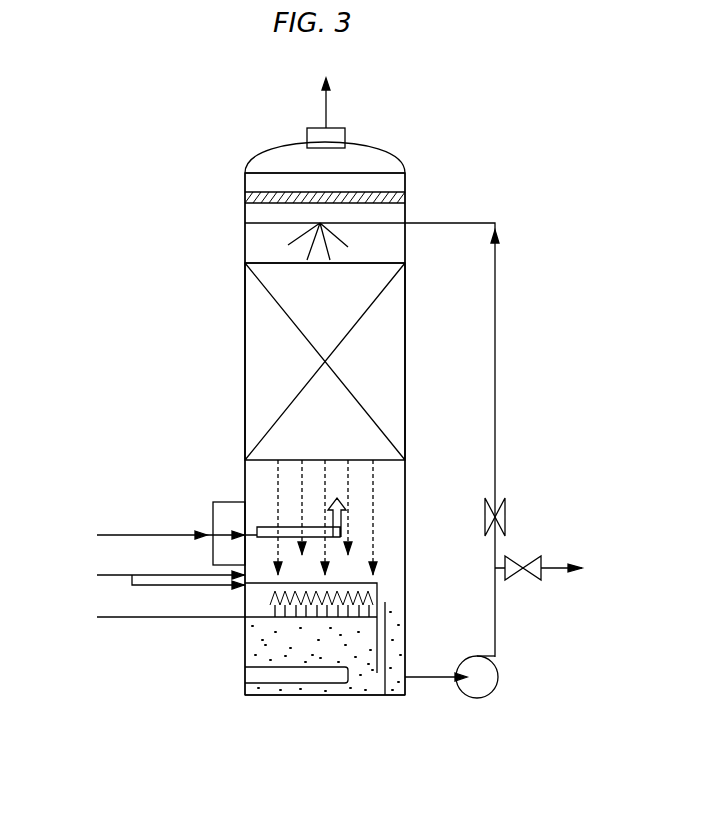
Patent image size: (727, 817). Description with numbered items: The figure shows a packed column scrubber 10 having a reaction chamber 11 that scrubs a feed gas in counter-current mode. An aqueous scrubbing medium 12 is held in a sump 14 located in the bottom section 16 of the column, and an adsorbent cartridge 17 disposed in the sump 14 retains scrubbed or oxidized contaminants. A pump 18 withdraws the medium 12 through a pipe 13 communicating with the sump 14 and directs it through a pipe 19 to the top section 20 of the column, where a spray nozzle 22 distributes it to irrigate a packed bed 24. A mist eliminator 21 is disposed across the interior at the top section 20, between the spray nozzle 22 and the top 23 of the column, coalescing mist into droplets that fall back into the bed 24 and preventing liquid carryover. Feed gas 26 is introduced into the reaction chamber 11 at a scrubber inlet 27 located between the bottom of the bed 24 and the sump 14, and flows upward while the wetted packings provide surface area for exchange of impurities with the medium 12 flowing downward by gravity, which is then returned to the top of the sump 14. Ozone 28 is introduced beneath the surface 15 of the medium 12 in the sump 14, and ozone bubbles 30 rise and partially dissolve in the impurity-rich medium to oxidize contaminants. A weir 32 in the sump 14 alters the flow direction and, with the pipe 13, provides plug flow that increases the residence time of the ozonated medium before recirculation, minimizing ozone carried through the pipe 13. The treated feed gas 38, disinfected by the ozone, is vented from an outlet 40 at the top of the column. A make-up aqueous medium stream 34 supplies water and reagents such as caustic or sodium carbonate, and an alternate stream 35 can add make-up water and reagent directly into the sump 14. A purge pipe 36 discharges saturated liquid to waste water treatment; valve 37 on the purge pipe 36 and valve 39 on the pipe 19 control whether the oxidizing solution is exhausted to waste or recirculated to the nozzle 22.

The packed column scrubber 10 is at (492, 138).
The reaction chamber 11 is at (403, 254).
The aqueous scrubbing medium 12 is at (318, 644).
The pipe 13 is at (430, 678).
The sump 14 is at (269, 640).
The surface 15 is at (404, 582).
The bottom section 16 is at (241, 697).
The adsorbent cartridge 17 is at (269, 672).
The pump 18 is at (490, 692).
The pipe 19 is at (500, 456).
The top section 20 is at (243, 247).
The mist eliminator 21 is at (407, 199).
The spray nozzle 22 is at (302, 234).
The top 23 is at (386, 146).
The packed bed 24 is at (381, 377).
The feed gas 26 is at (115, 535).
The scrubber inlet 27 is at (212, 520).
The ozone 28 is at (120, 618).
The ozone bubbles 30 is at (272, 592).
The weir 32 is at (389, 621).
The make-up aqueous medium stream 34 is at (137, 575).
The alternate stream 35 is at (130, 590).
The purge pipe 36 is at (560, 568).
The valve 37 is at (523, 580).
The treated feed gas 38 is at (329, 106).
The valve 39 is at (505, 517).
The outlet 40 is at (308, 128).